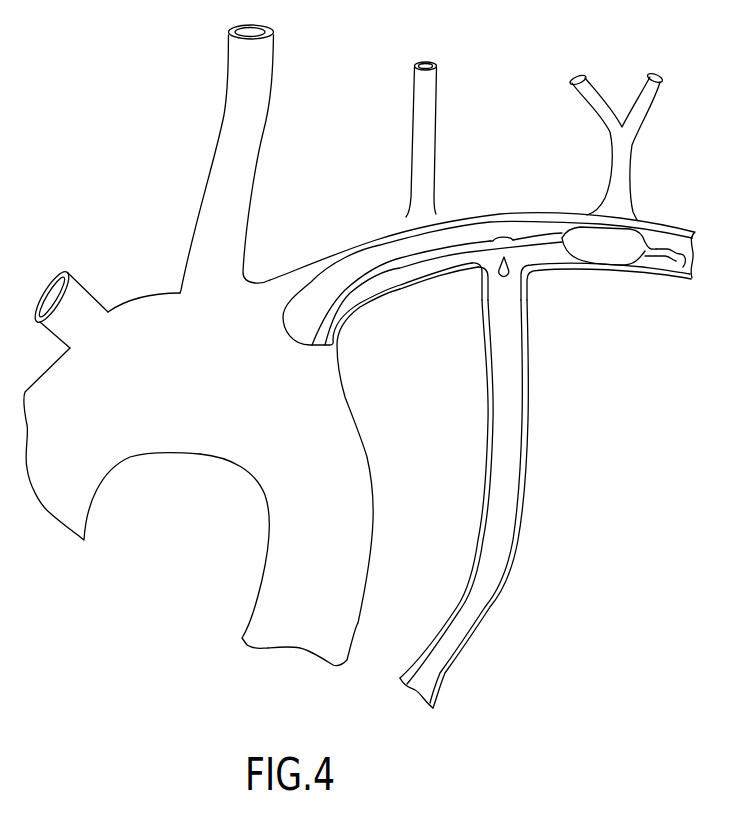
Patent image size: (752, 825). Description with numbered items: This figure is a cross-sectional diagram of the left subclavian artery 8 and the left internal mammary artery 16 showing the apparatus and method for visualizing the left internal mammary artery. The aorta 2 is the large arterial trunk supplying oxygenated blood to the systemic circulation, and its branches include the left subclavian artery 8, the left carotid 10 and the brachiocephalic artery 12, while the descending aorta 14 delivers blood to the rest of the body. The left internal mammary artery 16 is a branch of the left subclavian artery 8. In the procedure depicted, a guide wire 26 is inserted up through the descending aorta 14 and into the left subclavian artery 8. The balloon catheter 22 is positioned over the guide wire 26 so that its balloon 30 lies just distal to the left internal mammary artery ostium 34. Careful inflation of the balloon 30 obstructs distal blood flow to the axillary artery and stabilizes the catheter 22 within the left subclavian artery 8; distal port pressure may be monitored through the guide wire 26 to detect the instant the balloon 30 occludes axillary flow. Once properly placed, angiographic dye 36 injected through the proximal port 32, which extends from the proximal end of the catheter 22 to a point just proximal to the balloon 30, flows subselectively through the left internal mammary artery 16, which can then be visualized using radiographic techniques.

The aorta 2 is at (65, 452).
The left subclavian artery 8 is at (372, 244).
The left carotid 10 is at (245, 95).
The brachiocephalic artery 12 is at (84, 300).
The descending aorta 14 is at (323, 569).
The left internal mammary artery 16 is at (525, 483).
The balloon catheter 22 is at (558, 224).
The guide wire 26 is at (681, 268).
The balloon 30 is at (622, 250).
The proximal port 32 is at (501, 240).
The left internal mammary artery ostium 34 is at (481, 273).
The angiographic dye 36 is at (510, 269).